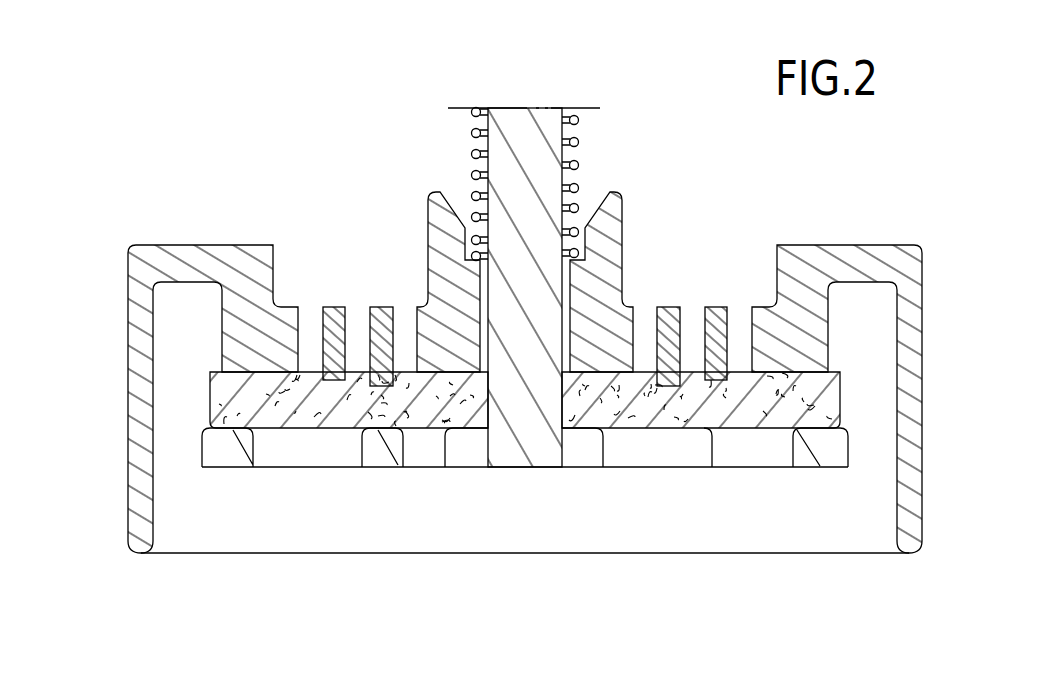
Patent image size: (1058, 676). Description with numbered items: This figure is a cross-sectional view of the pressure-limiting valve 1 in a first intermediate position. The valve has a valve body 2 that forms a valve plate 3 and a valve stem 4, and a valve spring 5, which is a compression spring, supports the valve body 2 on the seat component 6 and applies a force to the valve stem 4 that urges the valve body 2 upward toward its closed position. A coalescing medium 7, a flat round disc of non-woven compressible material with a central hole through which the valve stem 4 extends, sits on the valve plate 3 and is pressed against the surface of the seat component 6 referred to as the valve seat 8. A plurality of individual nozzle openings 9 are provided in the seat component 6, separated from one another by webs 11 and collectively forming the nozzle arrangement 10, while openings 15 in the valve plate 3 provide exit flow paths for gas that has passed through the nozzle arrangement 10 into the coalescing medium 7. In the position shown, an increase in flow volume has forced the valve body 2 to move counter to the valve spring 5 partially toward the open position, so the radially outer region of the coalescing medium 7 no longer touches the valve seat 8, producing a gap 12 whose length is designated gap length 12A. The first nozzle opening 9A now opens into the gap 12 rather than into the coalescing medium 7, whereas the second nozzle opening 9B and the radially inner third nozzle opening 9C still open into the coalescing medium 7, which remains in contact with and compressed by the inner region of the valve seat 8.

The pressure-limiting valve 1 is at (312, 165).
The valve body 2 is at (512, 472).
The valve plate 3 is at (495, 447).
The valve stem 4 is at (532, 157).
The valve spring 5 is at (577, 162).
The seat component 6 is at (220, 263).
The coalescing medium 7 is at (803, 407).
The valve seat 8 is at (833, 363).
The nozzle openings 9 is at (737, 330).
The first nozzle opening 9A is at (307, 322).
The second nozzle opening 9B is at (358, 323).
The third nozzle opening 9C is at (408, 323).
The nozzle arrangement 10 is at (732, 343).
The webs 11 is at (715, 333).
The gap 12 is at (845, 372).
The gap length 12A is at (218, 370).
The openings 15 is at (742, 450).